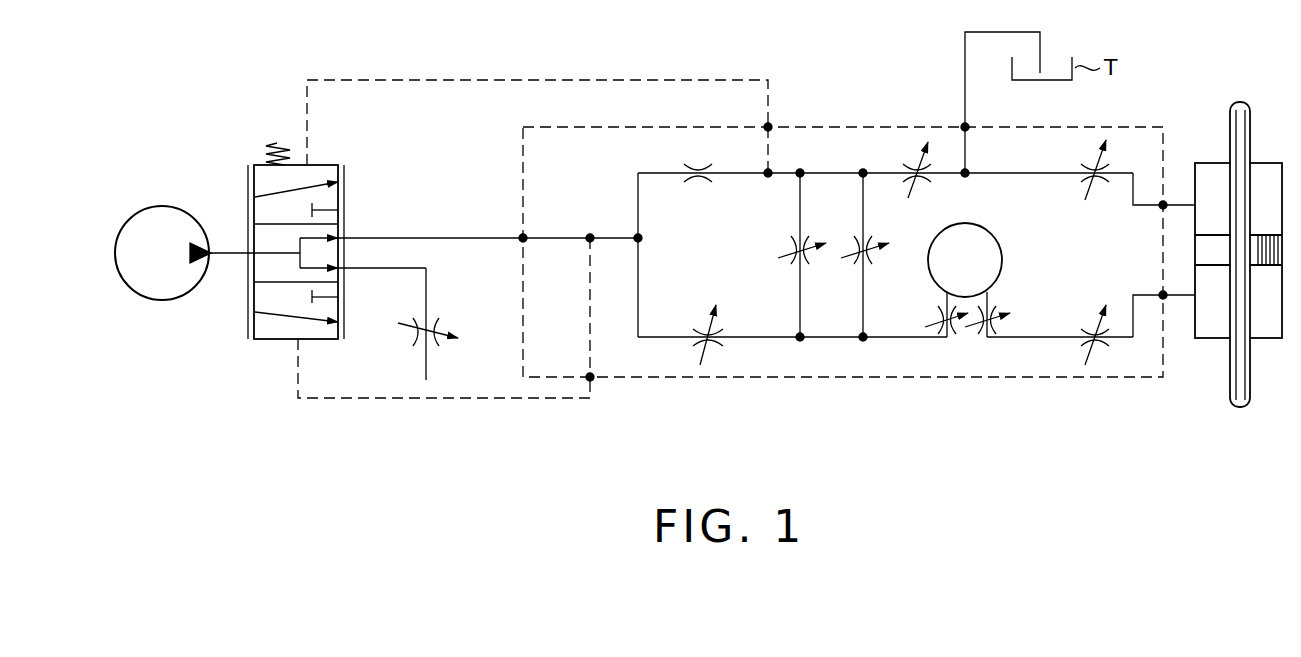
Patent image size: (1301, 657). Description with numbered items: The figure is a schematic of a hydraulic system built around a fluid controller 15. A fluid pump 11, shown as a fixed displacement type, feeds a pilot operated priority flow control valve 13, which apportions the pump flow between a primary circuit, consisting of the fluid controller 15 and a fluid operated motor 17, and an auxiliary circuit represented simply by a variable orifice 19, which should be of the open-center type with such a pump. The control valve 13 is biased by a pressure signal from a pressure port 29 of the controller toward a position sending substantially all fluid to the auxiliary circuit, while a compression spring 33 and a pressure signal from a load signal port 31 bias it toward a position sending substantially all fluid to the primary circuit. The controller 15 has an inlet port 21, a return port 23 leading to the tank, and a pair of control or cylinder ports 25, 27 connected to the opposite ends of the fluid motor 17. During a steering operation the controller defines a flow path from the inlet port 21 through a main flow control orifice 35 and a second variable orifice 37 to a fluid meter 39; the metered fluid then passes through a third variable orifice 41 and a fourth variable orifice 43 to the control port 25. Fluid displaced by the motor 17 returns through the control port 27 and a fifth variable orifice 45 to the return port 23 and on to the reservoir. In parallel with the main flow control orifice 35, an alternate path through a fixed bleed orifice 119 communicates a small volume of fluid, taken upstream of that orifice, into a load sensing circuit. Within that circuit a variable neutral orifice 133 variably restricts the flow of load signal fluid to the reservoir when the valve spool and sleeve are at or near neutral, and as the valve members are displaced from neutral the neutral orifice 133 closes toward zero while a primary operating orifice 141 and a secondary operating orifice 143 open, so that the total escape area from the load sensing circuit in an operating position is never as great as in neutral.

The fluid pump 11 is at (160, 203).
The priority flow control valve 13 is at (238, 330).
The fluid controller 15 is at (512, 158).
The fluid operated motor 17 is at (1201, 150).
The variable orifice 19 is at (441, 316).
The inlet port 21 is at (521, 236).
The return port 23 is at (962, 124).
The control port 25 is at (1160, 292).
The control port 27 is at (1160, 208).
The pressure port 29 is at (592, 380).
The load signal port 31 is at (776, 122).
The compression spring 33 is at (280, 141).
The main flow control orifice 35 is at (694, 326).
The second variable orifice 37 is at (936, 312).
The fluid meter 39 is at (1003, 252).
The third variable orifice 41 is at (999, 307).
The fourth variable orifice 43 is at (1078, 328).
The fifth variable orifice 45 is at (1081, 183).
The fixed bleed orifice 119 is at (687, 159).
The variable neutral orifice 133 is at (909, 158).
The primary operating orifice 141 is at (786, 245).
The secondary operating orifice 143 is at (852, 245).